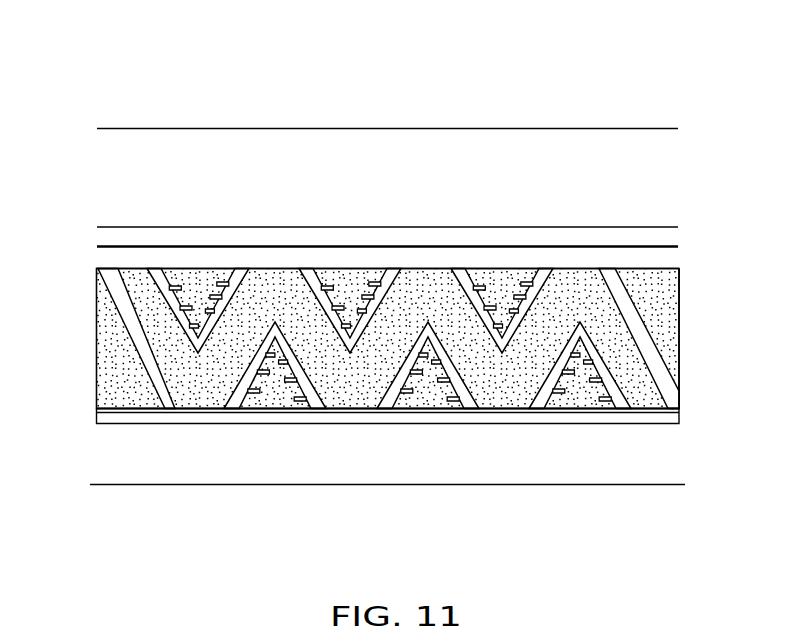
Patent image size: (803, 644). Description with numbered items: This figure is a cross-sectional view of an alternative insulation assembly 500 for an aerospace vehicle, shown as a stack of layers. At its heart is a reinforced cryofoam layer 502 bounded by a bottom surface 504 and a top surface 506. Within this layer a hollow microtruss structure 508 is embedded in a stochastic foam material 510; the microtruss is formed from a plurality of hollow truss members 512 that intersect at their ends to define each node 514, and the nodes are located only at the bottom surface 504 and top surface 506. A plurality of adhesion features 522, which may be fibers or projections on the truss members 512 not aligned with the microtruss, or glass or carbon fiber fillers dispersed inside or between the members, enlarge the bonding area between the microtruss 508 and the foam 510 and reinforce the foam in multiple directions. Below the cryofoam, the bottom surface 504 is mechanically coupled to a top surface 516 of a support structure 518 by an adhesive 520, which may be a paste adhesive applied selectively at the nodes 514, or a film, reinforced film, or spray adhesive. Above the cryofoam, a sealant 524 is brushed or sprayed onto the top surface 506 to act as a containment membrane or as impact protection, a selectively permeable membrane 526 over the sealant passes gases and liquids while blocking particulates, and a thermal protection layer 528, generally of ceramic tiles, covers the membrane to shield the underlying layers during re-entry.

The insulation assembly 500 is at (72, 107).
The reinforced cryofoam layer 502 is at (688, 337).
The bottom surface 504 is at (110, 403).
The top surface 506 is at (122, 277).
The hollow microtruss structure 508 is at (681, 385).
The stochastic foam material 510 is at (663, 298).
The truss members 512 is at (122, 332).
The node 514 is at (273, 278).
The top surface of support structure 516 is at (107, 422).
The support structure 518 is at (667, 457).
The adhesive 520 is at (678, 418).
The adhesion features 522 is at (378, 277).
The sealant 524 is at (663, 258).
The permeable membrane 526 is at (672, 235).
The thermal protection layer 528 is at (662, 172).